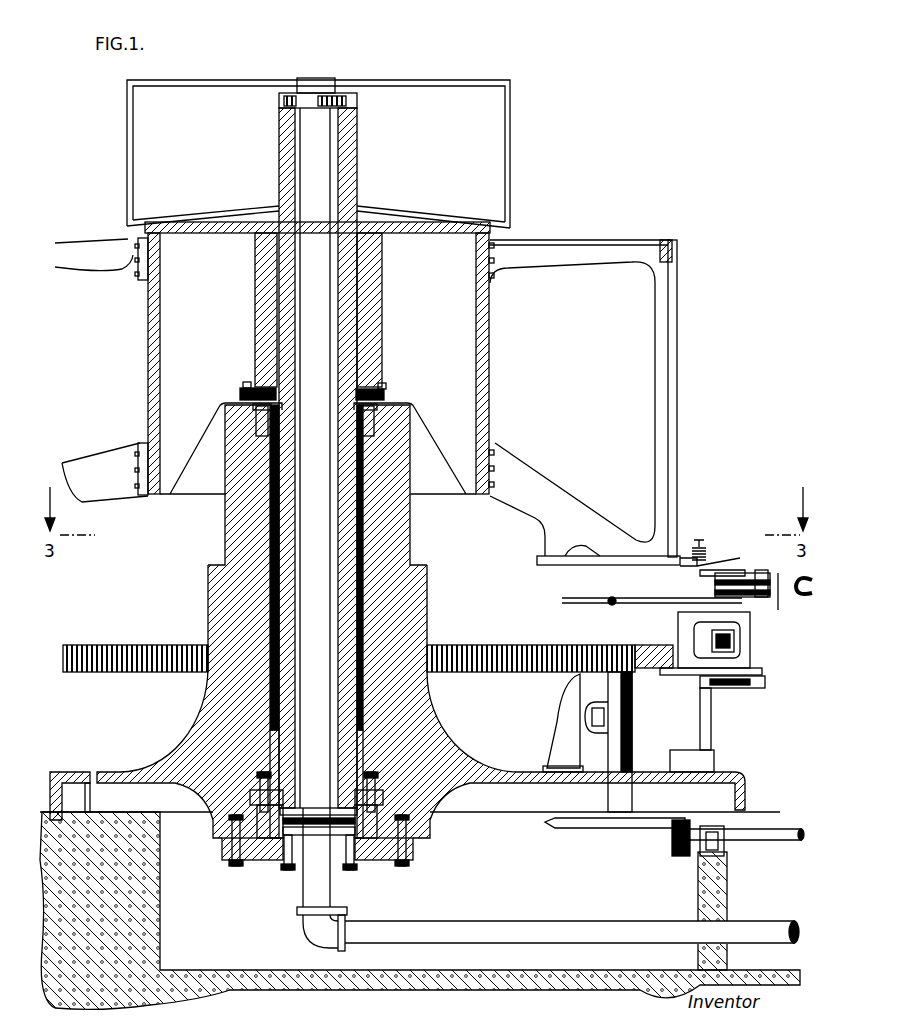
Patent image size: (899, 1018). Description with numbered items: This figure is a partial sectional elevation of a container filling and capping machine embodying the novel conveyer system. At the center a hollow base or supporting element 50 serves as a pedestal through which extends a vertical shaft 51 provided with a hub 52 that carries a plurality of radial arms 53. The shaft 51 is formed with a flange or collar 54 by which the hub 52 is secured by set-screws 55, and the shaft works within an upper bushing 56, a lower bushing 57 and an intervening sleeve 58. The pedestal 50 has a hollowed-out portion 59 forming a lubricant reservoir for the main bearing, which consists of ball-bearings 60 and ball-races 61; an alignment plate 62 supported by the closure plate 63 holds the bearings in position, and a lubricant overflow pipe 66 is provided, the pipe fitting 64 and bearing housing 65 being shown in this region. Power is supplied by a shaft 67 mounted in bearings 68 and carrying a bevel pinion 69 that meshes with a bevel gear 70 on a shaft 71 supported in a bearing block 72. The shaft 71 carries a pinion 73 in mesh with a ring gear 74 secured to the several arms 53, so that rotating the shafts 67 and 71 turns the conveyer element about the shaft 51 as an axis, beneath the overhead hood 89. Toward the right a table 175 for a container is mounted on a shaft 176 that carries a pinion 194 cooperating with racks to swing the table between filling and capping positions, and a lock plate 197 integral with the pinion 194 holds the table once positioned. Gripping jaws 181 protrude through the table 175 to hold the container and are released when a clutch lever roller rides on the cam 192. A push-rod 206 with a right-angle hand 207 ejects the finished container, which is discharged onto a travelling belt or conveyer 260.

The hood 89 is at (515, 138).
The radial arms 53 is at (550, 276).
The hub 52 is at (262, 333).
The set-screws 55 is at (240, 392).
The flange or collar 54 is at (366, 396).
The upper bushing 56 is at (262, 432).
The sleeve 58 is at (270, 518).
The shaft 51 is at (270, 590).
The hollow base or supporting element 50 is at (185, 765).
The lower bushing 57 is at (200, 786).
The hollowed-out portion 59 is at (262, 861).
The ring gear 74 is at (640, 648).
The pinion 73 is at (607, 647).
The bearing block 72 is at (570, 738).
The shaft 71 is at (632, 722).
The bevel gear 70 is at (572, 829).
The bevel pinion 69 is at (682, 853).
The bearings 68 is at (722, 845).
The shaft 67 is at (778, 837).
The lubricant overflow pipe 66 is at (380, 832).
The closure plate 63 is at (400, 852).
The alignment plate 62 is at (355, 863).
The ball-bearings 60 is at (366, 832).
The ball-races 61 is at (271, 861).
The bearing housing 65 is at (302, 861).
The pipe elbow 64 is at (308, 897).
The cam 192 is at (612, 598).
The shaft 176 is at (750, 640).
The jaws 181 is at (722, 578).
The lock plate 197 is at (765, 672).
The pinion 194 is at (760, 688).
The hand 207 is at (702, 566).
The push-rod 206 is at (711, 577).
The table or support 175 is at (778, 611).
The travelling belt or conveyer 260 is at (805, 600).